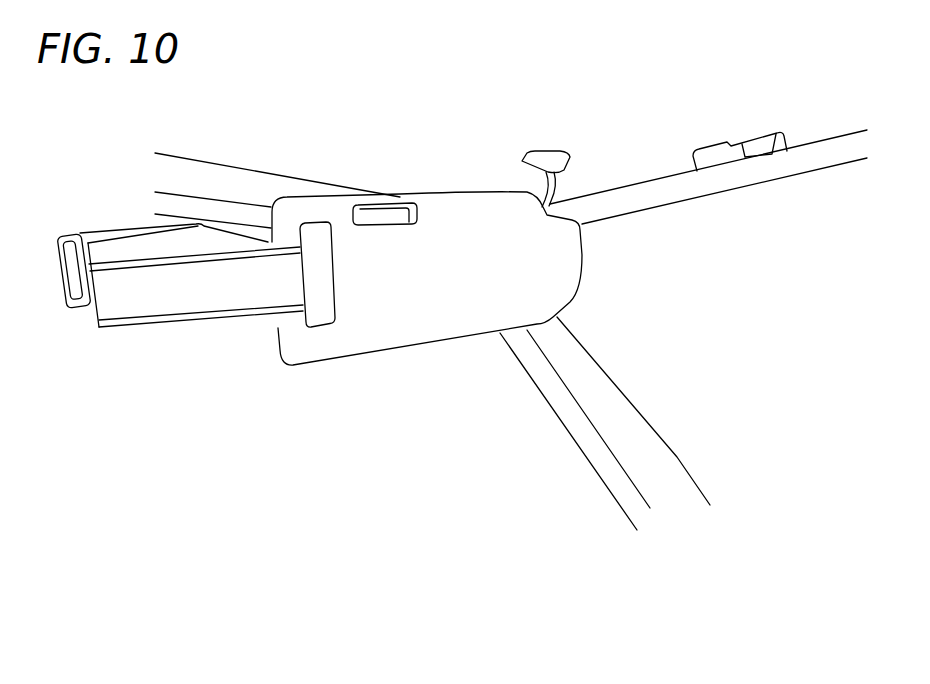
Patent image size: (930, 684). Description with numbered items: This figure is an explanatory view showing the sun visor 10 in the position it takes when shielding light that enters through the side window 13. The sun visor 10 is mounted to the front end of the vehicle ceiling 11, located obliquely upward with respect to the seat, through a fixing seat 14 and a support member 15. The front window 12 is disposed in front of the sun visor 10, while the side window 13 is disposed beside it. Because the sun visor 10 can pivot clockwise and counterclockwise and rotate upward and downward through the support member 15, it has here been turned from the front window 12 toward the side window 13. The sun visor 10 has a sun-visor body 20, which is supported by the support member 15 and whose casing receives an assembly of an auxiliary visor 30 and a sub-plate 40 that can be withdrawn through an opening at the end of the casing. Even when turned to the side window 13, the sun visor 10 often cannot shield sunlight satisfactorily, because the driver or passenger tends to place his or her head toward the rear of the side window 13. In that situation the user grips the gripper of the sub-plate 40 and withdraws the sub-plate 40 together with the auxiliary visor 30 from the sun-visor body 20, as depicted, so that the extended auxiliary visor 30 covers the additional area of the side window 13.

The sun visor 10 is at (445, 253).
The vehicle ceiling 11 is at (450, 71).
The front window 12 is at (732, 309).
The side window 13 is at (349, 403).
The fixing seat 14 is at (547, 152).
The support member 15 is at (560, 188).
The sun-visor body 20 is at (440, 327).
The auxiliary visor 30 is at (192, 303).
The sub-plate 40 is at (107, 248).